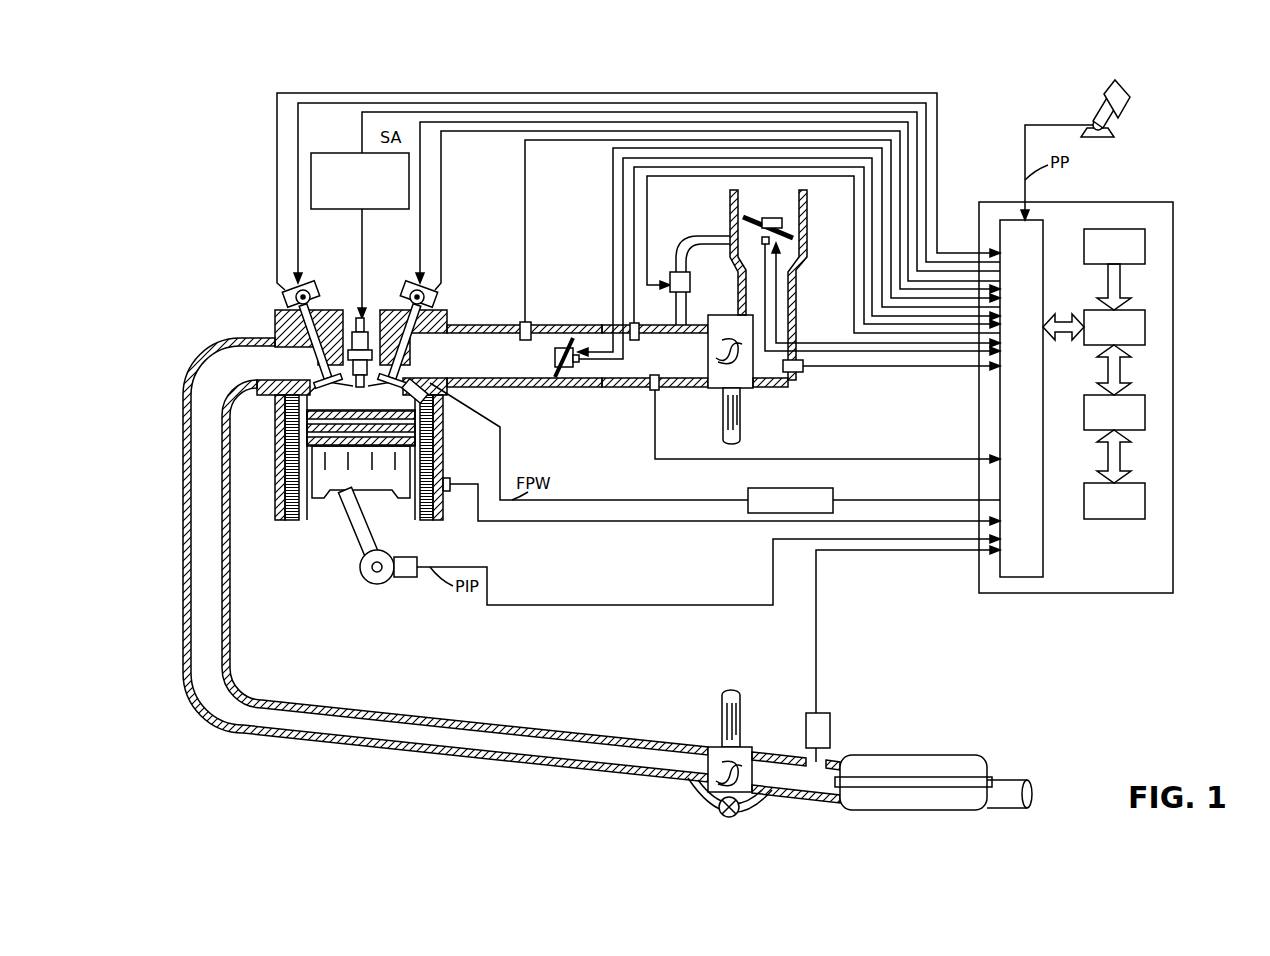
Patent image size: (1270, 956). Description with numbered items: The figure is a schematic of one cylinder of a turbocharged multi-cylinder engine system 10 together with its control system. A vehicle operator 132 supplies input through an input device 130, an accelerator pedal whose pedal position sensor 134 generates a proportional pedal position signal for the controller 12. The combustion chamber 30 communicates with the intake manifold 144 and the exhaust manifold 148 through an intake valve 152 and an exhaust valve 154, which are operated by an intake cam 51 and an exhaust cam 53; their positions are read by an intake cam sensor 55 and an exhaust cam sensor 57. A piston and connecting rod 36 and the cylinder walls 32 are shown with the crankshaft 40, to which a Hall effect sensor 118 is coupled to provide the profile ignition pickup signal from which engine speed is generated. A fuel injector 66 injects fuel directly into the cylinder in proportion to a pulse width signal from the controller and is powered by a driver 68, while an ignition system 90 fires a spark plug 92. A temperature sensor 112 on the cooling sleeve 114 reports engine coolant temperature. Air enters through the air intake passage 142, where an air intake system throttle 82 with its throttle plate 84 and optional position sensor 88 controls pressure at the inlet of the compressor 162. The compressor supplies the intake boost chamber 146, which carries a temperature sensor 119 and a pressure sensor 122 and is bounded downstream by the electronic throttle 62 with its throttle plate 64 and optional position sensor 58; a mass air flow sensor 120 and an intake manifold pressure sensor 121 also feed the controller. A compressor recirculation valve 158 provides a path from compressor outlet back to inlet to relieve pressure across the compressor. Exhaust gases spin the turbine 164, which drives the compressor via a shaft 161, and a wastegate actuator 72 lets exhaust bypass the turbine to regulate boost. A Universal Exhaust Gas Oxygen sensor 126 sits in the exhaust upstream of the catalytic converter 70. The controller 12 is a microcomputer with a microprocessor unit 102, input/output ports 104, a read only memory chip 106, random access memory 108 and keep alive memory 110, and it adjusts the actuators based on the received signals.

The engine system 10 is at (200, 142).
The controller 12 is at (1114, 384).
The combustion chamber 30 is at (292, 478).
The cylinder walls 32 is at (313, 522).
The piston 36 is at (345, 490).
The crankshaft 40 is at (368, 584).
The intake cam 51 is at (422, 308).
The exhaust cam 53 is at (290, 309).
The intake cam sensor 55 is at (428, 300).
The exhaust cam sensor 57 is at (290, 293).
The position sensor 58 is at (580, 368).
The electronic throttle 62 is at (558, 340).
The throttle plate 64 is at (581, 346).
The fuel injector 66 is at (445, 410).
The driver 68 is at (834, 505).
The catalytic converter 70 is at (845, 800).
The wastegate actuator 72 is at (718, 808).
The air intake system throttle 82 is at (743, 230).
The throttle plate 84 is at (735, 212).
The position sensor 88 is at (736, 233).
The ignition system 90 is at (326, 153).
The spark plug 92 is at (366, 320).
The microprocessor unit 102 is at (1147, 322).
The input/output ports 104 is at (1045, 226).
The read only memory chip 106 is at (1147, 245).
The random access memory 108 is at (1147, 412).
The keep alive memory 110 is at (1147, 500).
The temperature sensor 112 is at (449, 478).
The cooling sleeve 114 is at (433, 508).
The Hall effect sensor 118 is at (403, 578).
The temperature sensor 119 is at (658, 389).
The mass air flow sensor 120 is at (800, 372).
The intake manifold pressure sensor 121 is at (522, 322).
The pressure sensor 122 is at (640, 326).
The Universal Exhaust Gas Oxygen sensor 126 is at (830, 714).
The input device 130 is at (1120, 118).
The vehicle operator 132 is at (1125, 100).
The pedal position sensor 134 is at (1112, 130).
The air intake passage 142 is at (731, 286).
The intake manifold 144 is at (524, 356).
The intake boost chamber 146 is at (655, 356).
The exhaust manifold 148 is at (445, 560).
The intake valve 152 is at (392, 383).
The exhaust valve 154 is at (322, 381).
The compressor recirculation valve 158 is at (676, 272).
The shaft 161 is at (723, 426).
The compressor 162 is at (755, 390).
The turbine 164 is at (718, 747).